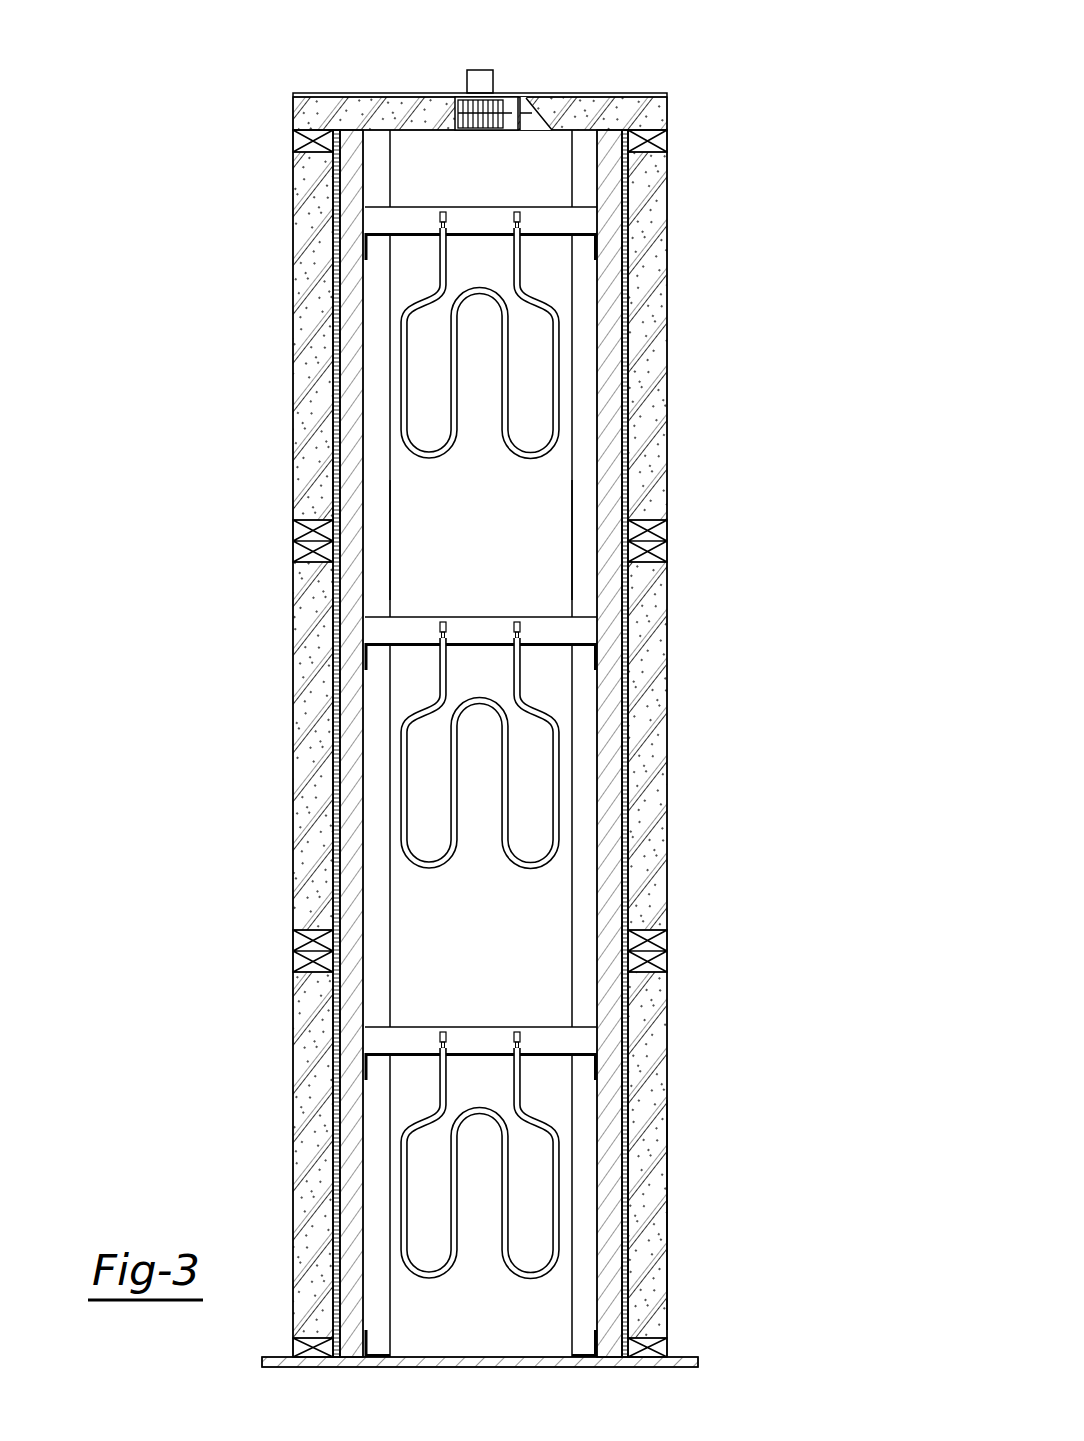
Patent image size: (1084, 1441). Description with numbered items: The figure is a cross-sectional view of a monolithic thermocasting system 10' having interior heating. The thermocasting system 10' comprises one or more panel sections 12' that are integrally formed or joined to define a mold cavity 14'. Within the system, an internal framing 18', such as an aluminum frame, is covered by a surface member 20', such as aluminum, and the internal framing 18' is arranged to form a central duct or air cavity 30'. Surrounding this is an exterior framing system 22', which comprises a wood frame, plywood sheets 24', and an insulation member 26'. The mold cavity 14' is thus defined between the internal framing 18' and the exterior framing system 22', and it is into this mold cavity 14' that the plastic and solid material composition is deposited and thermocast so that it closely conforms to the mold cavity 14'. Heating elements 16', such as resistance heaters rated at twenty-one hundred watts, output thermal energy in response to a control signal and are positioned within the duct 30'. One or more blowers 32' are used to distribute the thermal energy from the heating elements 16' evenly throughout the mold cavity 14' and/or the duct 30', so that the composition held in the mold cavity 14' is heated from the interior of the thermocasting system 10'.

The thermocasting system 10' is at (458, 689).
The panel section 12' is at (267, 743).
The mold cavity 14' is at (765, 743).
The heating element 16' is at (618, 744).
The internal framing 18' is at (607, 795).
The surface member 20' is at (598, 743).
The exterior framing system 22' is at (601, 741).
The plywood sheet 24' is at (617, 743).
The insulation member 26' is at (736, 1215).
The duct 30' is at (481, 540).
The blower 32' is at (590, 65).